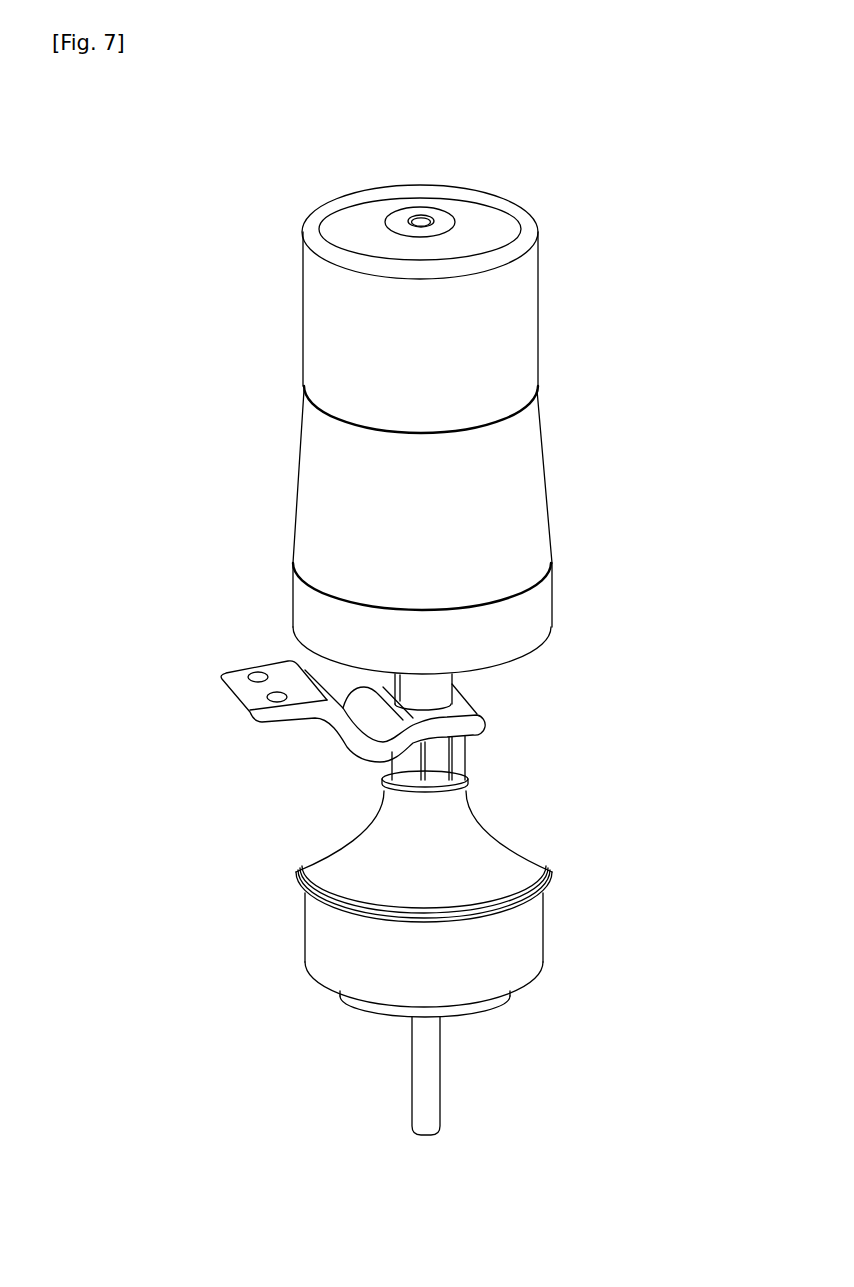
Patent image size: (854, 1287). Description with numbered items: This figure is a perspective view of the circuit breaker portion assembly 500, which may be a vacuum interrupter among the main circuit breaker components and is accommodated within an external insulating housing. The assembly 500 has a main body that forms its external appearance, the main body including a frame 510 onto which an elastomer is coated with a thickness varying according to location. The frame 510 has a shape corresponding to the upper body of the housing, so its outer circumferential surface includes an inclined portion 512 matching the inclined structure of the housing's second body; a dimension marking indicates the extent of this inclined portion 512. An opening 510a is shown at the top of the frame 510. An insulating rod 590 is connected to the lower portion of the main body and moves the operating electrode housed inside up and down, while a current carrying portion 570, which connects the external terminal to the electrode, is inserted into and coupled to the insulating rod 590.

The circuit breaker portion assembly 500 is at (251, 116).
The frame 510 is at (526, 308).
The shaft hole 510a is at (421, 210).
The inclined portion 512 is at (545, 388).
The current carrying portion 570 is at (228, 704).
The insulating rod 590 is at (557, 882).